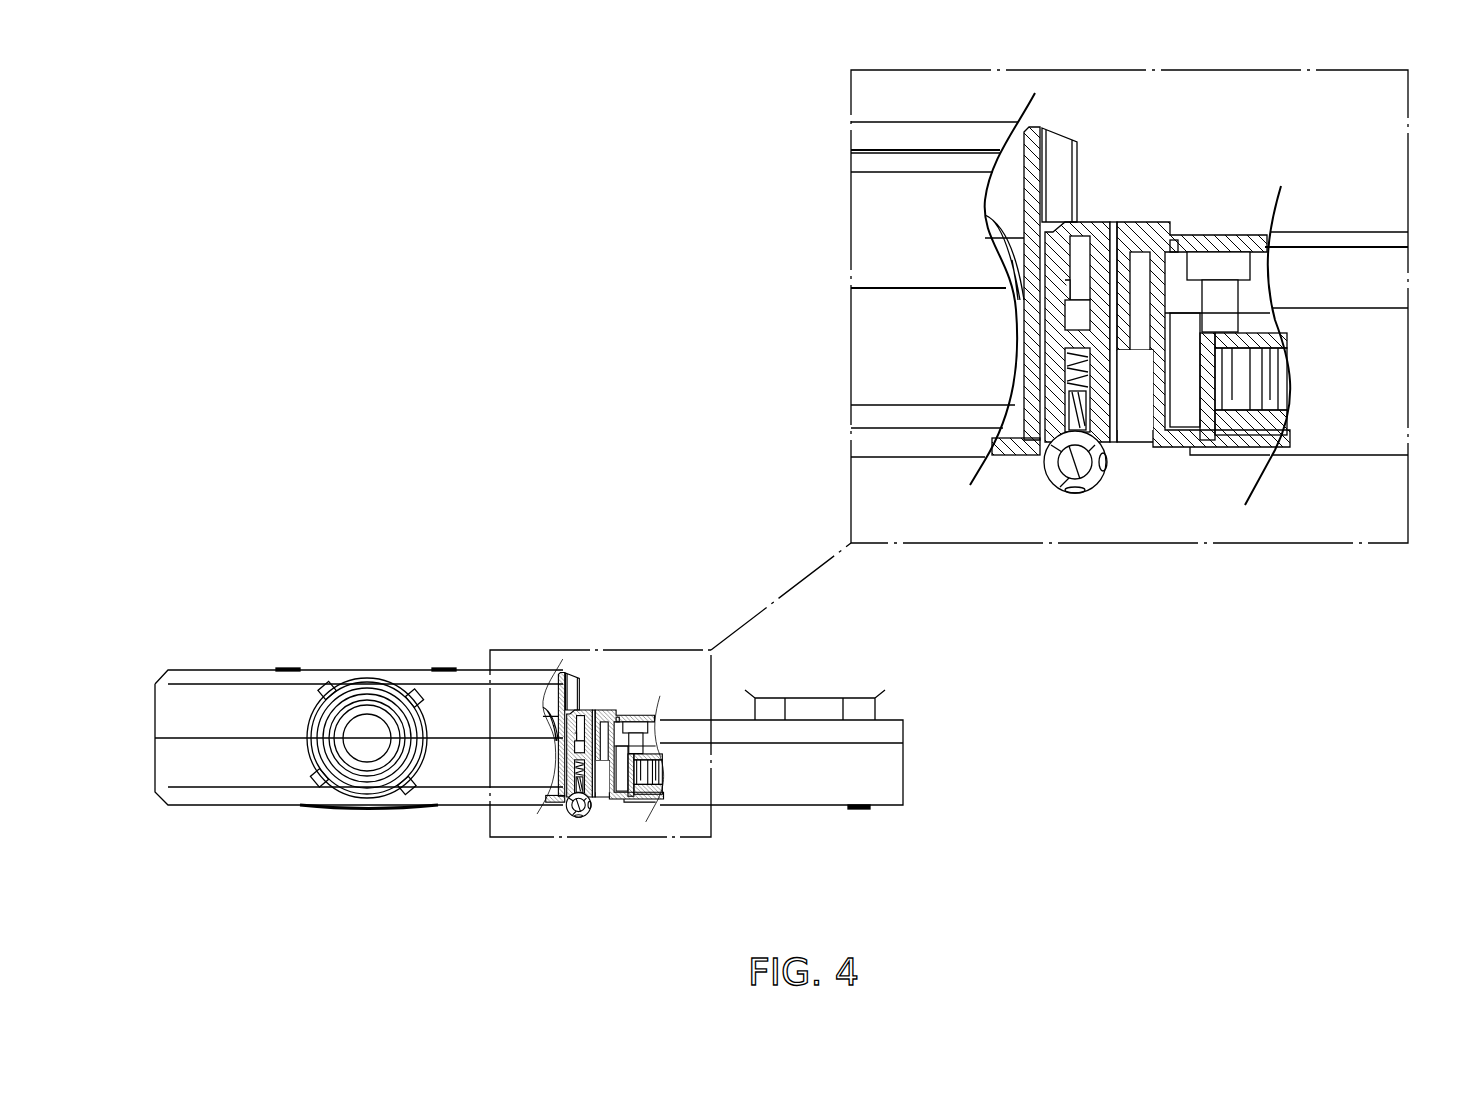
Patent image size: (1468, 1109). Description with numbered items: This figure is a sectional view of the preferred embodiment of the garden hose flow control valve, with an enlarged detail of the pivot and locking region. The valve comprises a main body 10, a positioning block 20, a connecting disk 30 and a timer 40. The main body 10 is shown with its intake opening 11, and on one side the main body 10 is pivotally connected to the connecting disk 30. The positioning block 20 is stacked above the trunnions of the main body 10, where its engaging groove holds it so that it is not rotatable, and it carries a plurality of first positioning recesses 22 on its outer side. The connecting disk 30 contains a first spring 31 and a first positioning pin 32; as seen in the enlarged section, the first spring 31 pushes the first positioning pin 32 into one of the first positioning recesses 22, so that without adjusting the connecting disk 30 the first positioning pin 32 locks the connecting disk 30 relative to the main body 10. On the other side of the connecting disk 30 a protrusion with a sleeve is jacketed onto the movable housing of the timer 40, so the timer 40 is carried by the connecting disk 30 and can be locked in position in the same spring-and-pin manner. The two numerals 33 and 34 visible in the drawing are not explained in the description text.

The main body 10 is at (859, 248).
The intake opening 11 is at (363, 753).
The positioning block 20 is at (876, 658).
The first positioning recesses 22 is at (1112, 442).
The connecting disk 30 is at (589, 704).
The first spring 31 is at (1045, 372).
The first positioning pin 32 is at (1148, 462).
The housing block 33 is at (1110, 222).
The bracket plate 34 is at (992, 243).
The timer 40 is at (1360, 223).